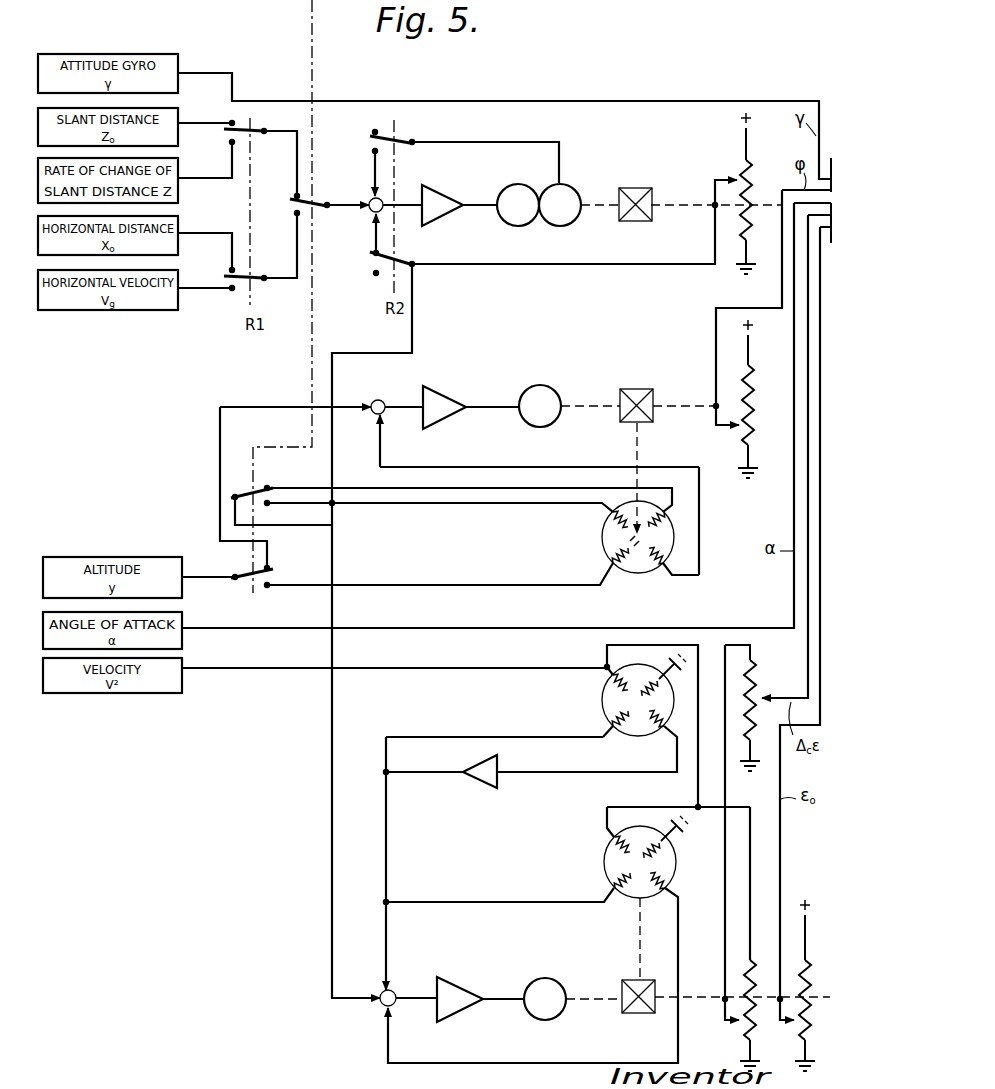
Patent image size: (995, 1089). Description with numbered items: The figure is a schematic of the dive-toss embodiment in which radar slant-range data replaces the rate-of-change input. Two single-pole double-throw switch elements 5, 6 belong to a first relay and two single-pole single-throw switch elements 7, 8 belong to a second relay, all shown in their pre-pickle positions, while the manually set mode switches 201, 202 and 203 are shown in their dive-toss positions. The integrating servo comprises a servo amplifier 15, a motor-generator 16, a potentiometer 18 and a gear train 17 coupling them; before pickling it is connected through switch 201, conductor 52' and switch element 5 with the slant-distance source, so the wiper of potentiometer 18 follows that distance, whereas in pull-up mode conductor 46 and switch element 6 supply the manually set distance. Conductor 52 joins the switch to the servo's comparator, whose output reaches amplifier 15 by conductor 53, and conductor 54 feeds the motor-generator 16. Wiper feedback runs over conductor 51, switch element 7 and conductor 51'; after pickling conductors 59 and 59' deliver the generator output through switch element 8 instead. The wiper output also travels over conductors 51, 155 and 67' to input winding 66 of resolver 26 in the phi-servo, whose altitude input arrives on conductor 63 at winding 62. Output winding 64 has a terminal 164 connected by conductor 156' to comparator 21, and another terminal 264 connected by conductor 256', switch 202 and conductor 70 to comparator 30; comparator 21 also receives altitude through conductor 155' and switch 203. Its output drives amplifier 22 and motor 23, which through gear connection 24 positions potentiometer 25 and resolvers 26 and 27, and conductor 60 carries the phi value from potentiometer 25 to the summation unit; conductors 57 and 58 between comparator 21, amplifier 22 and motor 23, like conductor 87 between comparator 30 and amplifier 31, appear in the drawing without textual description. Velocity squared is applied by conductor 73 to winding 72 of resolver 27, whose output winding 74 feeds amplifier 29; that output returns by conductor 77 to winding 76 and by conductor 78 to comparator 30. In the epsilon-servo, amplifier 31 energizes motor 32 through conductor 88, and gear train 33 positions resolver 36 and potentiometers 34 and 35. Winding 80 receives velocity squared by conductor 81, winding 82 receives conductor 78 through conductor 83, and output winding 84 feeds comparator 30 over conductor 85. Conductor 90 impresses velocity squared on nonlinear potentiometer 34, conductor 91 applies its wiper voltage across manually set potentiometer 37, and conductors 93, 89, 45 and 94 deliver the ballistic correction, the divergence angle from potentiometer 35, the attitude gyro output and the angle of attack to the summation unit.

The single-pole double-throw switch 5 is at (241, 101).
The single-pole double-throw switch 6 is at (254, 286).
The single-pole single-throw switch 7 is at (403, 262).
The single-pole single-throw switch 8 is at (404, 139).
The servo amplifier 15 is at (447, 196).
The motor-generator 16 is at (539, 185).
The gear train 17 is at (642, 189).
The potentiometer 18 is at (757, 176).
The comparator 21 is at (379, 399).
The amplifier 22 is at (448, 394).
The motor 23 is at (541, 385).
The gear train 24 is at (637, 389).
The potentiometer 25 is at (757, 399).
The resolver 26 is at (602, 540).
The resolver 27 is at (602, 700).
The amplifier 29 is at (486, 762).
The comparator 30 is at (381, 1007).
The amplifier 31 is at (466, 985).
The motor 32 is at (556, 978).
The gear train 33 is at (631, 980).
The potentiometer 34 is at (750, 962).
The potentiometer 35 is at (805, 962).
The resolver 36 is at (604, 858).
The potentiometer 37 is at (753, 680).
The conductor 45 is at (586, 100).
The conductor 46 is at (297, 242).
The conductor 51 is at (563, 255).
The conductor 51' is at (357, 234).
The conductor 52 is at (329, 217).
The conductor 52' is at (278, 163).
The conductor 53 is at (404, 205).
The conductor 54 is at (478, 208).
The line 57 is at (400, 407).
The line 58 is at (492, 407).
The conductor 59 is at (485, 143).
The conductor 59' is at (358, 166).
The conductor 60 is at (782, 290).
The input winding 62 is at (610, 560).
The conductor 63 is at (462, 586).
The output winding 64 is at (638, 574).
The input winding 66 is at (611, 518).
The conductor 67' is at (440, 518).
The conductor 70 is at (332, 800).
The input winding 72 is at (609, 689).
The conductor 73 is at (488, 667).
The output winding 74 is at (661, 699).
The input winding 76 is at (627, 730).
The conductor 77 is at (521, 737).
The conductor 78 is at (386, 846).
The input winding 80 is at (612, 848).
The conductor 81 is at (698, 789).
The input winding 82 is at (612, 879).
The conductor 83 is at (512, 902).
The output winding 84 is at (665, 861).
The conductor 85 is at (678, 962).
The line 87 is at (413, 998).
The conductor 88 is at (511, 998).
The conductor 89 is at (781, 830).
The conductor 90 is at (750, 925).
The conductor 91 is at (725, 789).
The conductor 93 is at (807, 579).
The conductor 94 is at (760, 627).
The conductor 155 is at (402, 383).
The conductor 155' is at (295, 466).
The conductor 156' is at (732, 521).
The terminal 164 is at (664, 571).
The single-pole double-throw switch 201 is at (320, 198).
The single-pole double-throw switch 202 is at (235, 490).
The single-pole double-throw switch 203 is at (245, 572).
The conductor 256' is at (539, 495).
The output terminal 264 is at (664, 516).